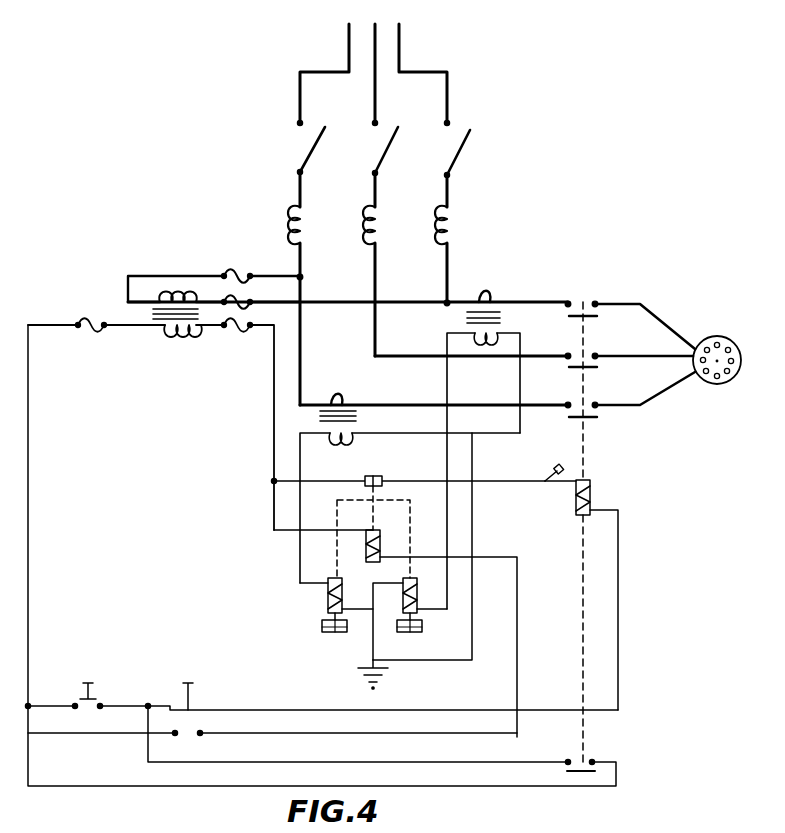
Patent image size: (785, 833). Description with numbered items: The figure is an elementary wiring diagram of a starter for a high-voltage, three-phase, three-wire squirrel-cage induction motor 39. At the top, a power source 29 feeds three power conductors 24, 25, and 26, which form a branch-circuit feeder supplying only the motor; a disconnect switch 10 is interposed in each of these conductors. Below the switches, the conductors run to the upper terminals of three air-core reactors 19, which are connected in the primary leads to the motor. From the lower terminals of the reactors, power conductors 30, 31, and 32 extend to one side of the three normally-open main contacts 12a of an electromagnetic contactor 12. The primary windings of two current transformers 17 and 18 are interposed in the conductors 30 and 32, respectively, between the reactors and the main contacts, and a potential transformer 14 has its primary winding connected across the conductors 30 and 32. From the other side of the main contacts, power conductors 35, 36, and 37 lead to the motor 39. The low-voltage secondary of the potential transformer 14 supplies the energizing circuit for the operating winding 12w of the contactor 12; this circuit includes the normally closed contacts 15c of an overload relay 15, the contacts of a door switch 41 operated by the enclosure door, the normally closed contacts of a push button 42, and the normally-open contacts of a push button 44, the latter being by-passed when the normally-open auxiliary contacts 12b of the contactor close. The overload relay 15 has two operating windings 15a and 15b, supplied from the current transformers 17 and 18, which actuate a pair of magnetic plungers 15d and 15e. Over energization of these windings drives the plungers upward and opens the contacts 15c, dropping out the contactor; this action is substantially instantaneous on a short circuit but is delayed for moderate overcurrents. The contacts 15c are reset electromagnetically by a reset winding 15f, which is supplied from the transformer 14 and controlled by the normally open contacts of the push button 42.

The power source 29 is at (404, 30).
The power conductor 24 is at (296, 115).
The power conductor 25 is at (371, 116).
The power conductor 26 is at (437, 110).
The disconnect switch 10 is at (372, 151).
The air-core reactor 19 is at (360, 230).
The power conductor 30 is at (301, 276).
The power conductor 31 is at (377, 276).
The power conductor 32 is at (450, 278).
The potential transformer 14 is at (112, 305).
The current transformer 18 is at (418, 349).
The current transformer 17 is at (381, 396).
The main contacts 12a is at (589, 306).
The electromagnetic contactor 12 is at (591, 452).
The power conductor 37 is at (668, 315).
The power conductor 36 is at (679, 362).
The power conductor 35 is at (664, 403).
The motor 39 is at (722, 386).
The normally closed contacts 15c is at (379, 478).
The door switch 41 is at (538, 483).
The operating winding 12w is at (592, 493).
The overload relay 15 is at (289, 597).
The reset winding 15f is at (366, 544).
The magnetic plunger 15d is at (326, 609).
The operating winding 15a is at (348, 588).
The operating winding 15b is at (419, 604).
The magnetic plunger 15e is at (405, 612).
The push button 44 is at (94, 686).
The push button 42 is at (192, 688).
The auxiliary contacts 12b is at (588, 763).